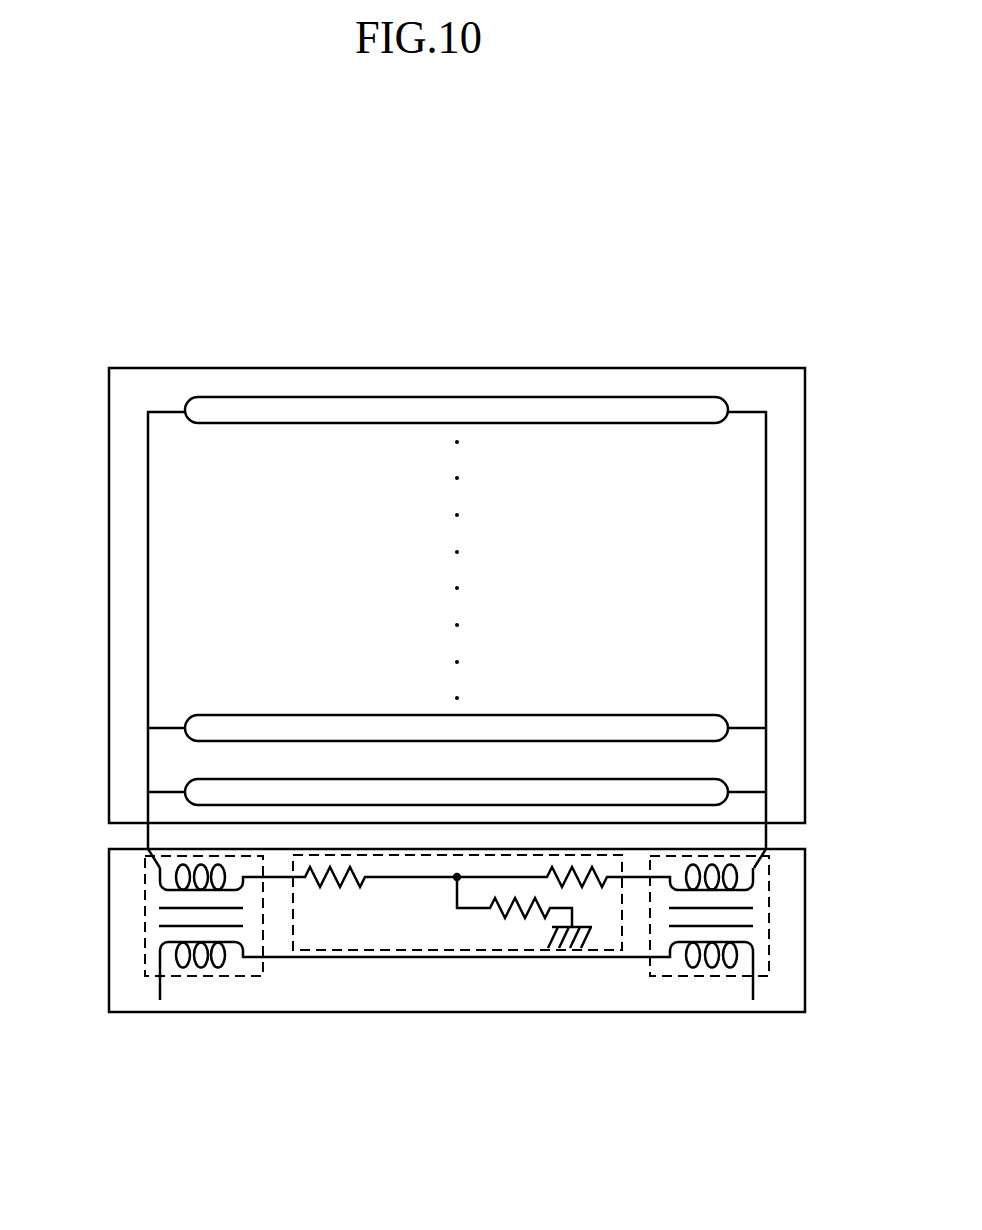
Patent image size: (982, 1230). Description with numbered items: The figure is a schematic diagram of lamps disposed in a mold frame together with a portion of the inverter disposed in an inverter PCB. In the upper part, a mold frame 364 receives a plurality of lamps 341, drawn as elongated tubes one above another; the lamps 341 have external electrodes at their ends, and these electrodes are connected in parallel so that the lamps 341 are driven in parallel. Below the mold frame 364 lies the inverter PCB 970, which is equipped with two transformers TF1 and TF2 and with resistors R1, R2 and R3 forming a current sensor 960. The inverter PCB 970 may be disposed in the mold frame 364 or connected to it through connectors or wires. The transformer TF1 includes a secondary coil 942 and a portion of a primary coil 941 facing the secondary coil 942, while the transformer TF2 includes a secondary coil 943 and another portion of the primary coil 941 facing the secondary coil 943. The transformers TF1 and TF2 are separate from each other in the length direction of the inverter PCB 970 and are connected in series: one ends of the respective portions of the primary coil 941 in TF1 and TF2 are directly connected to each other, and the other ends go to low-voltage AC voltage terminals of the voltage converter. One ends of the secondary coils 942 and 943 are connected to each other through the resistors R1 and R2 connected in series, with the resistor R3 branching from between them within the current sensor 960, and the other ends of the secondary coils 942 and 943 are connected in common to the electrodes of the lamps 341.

The lamp 341 is at (712, 398).
The mold frame 364 is at (805, 594).
The primary coil 941 is at (160, 957).
The secondary coil 942 is at (160, 873).
The secondary coil 943 is at (753, 877).
The current sensor 960 is at (457, 954).
The inverter PCB 970 is at (805, 928).
The transformer TF1 is at (168, 962).
The transformer TF2 is at (749, 962).
The resistor R1 is at (375, 893).
The resistor R2 is at (539, 891).
The resistor R3 is at (524, 914).